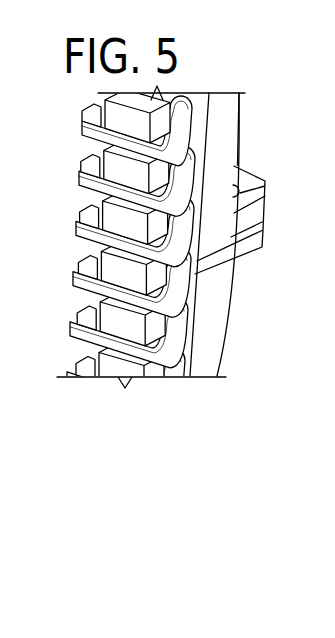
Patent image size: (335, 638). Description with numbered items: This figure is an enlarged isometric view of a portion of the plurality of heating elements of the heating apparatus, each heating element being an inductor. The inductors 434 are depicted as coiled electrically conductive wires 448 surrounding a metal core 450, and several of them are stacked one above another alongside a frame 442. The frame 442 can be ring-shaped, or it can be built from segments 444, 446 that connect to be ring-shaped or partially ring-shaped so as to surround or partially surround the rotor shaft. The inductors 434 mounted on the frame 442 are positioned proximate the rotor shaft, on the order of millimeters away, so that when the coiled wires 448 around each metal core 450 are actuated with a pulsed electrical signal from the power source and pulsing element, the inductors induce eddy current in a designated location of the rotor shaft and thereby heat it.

The contact clip assemblies 434 is at (75, 276).
The frame 442 is at (224, 312).
The segment 444 is at (233, 272).
The segment 446 is at (238, 112).
The coiled electrically conductive wires 448 is at (85, 157).
The metal core 450 is at (104, 202).